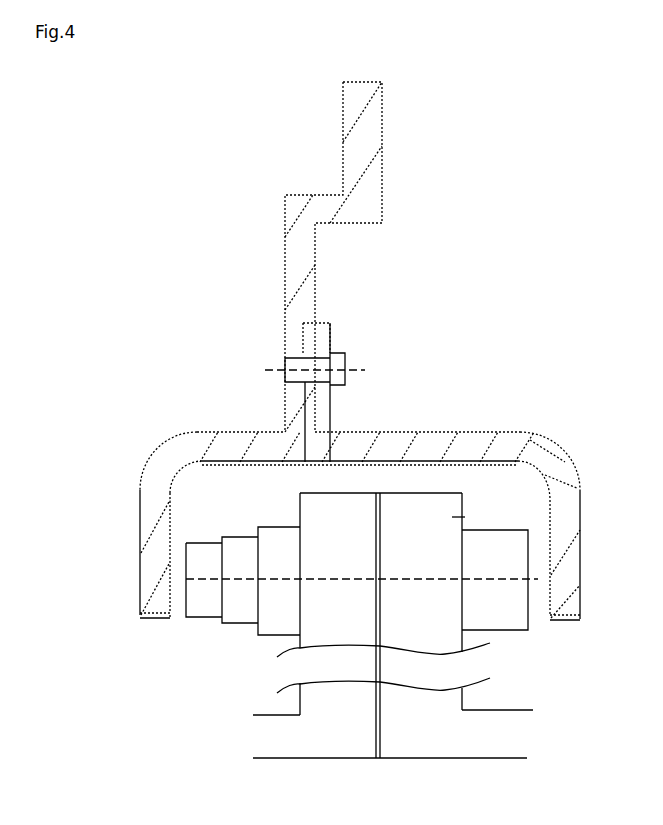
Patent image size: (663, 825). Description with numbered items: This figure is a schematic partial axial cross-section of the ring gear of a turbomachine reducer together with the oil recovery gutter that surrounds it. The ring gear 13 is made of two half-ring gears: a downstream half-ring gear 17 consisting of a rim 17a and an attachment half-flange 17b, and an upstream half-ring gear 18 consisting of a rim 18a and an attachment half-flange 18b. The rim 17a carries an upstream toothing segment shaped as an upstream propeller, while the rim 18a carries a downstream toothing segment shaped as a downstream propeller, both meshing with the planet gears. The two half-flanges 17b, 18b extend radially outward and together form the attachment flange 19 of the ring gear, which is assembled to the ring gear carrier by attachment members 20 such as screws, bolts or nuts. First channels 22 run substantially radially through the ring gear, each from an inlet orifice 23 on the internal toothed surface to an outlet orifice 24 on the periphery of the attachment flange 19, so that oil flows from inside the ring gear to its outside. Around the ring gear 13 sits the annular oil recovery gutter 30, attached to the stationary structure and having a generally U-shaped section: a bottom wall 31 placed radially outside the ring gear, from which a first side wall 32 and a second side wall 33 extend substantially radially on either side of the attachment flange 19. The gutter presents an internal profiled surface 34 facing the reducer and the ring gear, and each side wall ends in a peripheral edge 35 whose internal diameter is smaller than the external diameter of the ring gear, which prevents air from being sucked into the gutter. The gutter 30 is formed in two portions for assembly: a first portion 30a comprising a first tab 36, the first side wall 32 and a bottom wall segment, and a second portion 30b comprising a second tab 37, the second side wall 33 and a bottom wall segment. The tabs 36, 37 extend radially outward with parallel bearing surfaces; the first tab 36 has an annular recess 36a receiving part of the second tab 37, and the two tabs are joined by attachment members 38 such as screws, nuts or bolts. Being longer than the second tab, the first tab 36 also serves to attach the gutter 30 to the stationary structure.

The ring gear 13 is at (543, 704).
The downstream half-ring gear 17 is at (422, 766).
The rim 17a is at (487, 755).
The attachment half-flange 17b is at (452, 517).
The upstream half-ring gear 18 is at (264, 620).
The rim 18a is at (260, 724).
The attachment half-flange 18b is at (307, 508).
The attachment flange 19 is at (428, 514).
The attachment members 20 is at (390, 501).
The first channels 22 is at (548, 528).
The inlet orifice 23 is at (377, 762).
The outlet orifice 24 is at (390, 452).
The annular oil recovery gutter 30 is at (340, 489).
The first portion 30a is at (143, 467).
The second portion 30b is at (547, 440).
The bottom wall 31 is at (262, 431).
The first side wall 32 is at (148, 560).
The second side wall 33 is at (570, 578).
The profiled surface 34 is at (390, 452).
The peripheral edge 35 is at (157, 622).
The first tab 36 is at (287, 257).
The annular recess 36a is at (295, 344).
The second tab 37 is at (321, 327).
The attachment members 38 is at (348, 362).